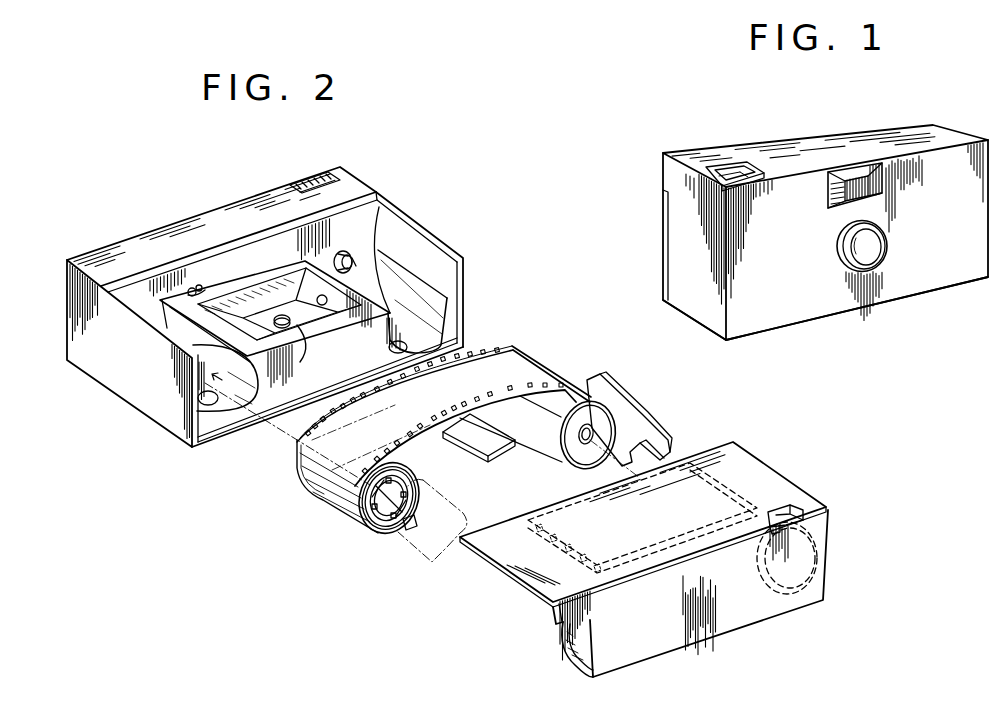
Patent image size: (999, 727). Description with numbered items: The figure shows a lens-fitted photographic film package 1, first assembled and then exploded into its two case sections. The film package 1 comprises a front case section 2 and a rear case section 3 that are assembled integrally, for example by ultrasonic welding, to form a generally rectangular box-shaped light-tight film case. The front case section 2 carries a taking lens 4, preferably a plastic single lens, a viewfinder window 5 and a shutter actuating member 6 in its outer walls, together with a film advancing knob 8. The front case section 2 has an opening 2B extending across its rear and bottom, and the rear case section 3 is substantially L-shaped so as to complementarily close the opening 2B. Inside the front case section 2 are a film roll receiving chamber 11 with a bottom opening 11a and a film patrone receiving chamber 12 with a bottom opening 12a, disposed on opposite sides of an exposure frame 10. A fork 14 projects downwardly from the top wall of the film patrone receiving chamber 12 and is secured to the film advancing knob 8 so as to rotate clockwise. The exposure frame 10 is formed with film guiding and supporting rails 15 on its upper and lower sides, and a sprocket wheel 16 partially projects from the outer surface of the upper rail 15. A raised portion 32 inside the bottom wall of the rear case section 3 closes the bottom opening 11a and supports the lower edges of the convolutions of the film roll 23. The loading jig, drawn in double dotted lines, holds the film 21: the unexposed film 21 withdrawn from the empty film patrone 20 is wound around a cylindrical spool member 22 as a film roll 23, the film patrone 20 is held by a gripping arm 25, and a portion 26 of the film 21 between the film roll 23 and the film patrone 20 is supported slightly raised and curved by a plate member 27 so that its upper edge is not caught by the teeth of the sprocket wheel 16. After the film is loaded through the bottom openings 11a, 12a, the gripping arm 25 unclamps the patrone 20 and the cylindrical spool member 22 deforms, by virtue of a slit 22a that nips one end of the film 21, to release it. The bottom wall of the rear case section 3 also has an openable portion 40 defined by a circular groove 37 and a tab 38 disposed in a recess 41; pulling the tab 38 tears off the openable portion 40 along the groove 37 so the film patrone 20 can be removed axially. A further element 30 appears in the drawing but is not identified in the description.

In FIG. 1, the lens-fitted photographic film package 1 is at (943, 130).
In FIG. 1, the front case section 2 is at (812, 306).
In FIG. 2, the front case section 2 is at (120, 388).
In FIG. 2, the opening 2B is at (230, 432).
In FIG. 1, the rear case section 3 is at (664, 245).
In FIG. 2, the rear case section 3 is at (530, 568).
In FIG. 1, the taking lens 4 is at (842, 245).
In FIG. 1, the viewfinder window 5 is at (882, 181).
In FIG. 1, the shutter actuating member 6 is at (739, 162).
In FIG. 2, the film advancing knob 8 is at (314, 182).
In FIG. 2, the exposure frame 10 is at (326, 313).
In FIG. 2, the film roll receiving chamber 11 is at (198, 345).
In FIG. 2, the bottom opening 11a is at (205, 395).
In FIG. 2, the film patrone receiving chamber 12 is at (421, 292).
In FIG. 2, the bottom opening 12a is at (388, 348).
In FIG. 2, the fork 14 is at (356, 258).
In FIG. 2, the film guiding and supporting rails 15 is at (298, 340).
In FIG. 2, the sprocket wheel 16 is at (195, 291).
In FIG. 2, the film patrone 20 is at (545, 366).
In FIG. 2, the film 21 is at (486, 348).
In FIG. 2, the cylindrical spool member 22 is at (423, 548).
In FIG. 2, the slit 22a is at (407, 546).
In FIG. 2, the film roll 23 is at (370, 532).
In FIG. 2, the gripping arm 25 is at (614, 387).
In FIG. 2, the portion of the film 26 is at (433, 406).
In FIG. 2, the plate member 27 is at (470, 458).
In FIG. 2, the light shielding rib 30 is at (632, 572).
In FIG. 2, the raised portion 32 is at (564, 640).
In FIG. 2, the circular groove 37 is at (757, 567).
In FIG. 2, the tab 38 is at (787, 512).
In FIG. 2, the openable portion 40 is at (803, 563).
In FIG. 2, the recess 41 is at (770, 510).